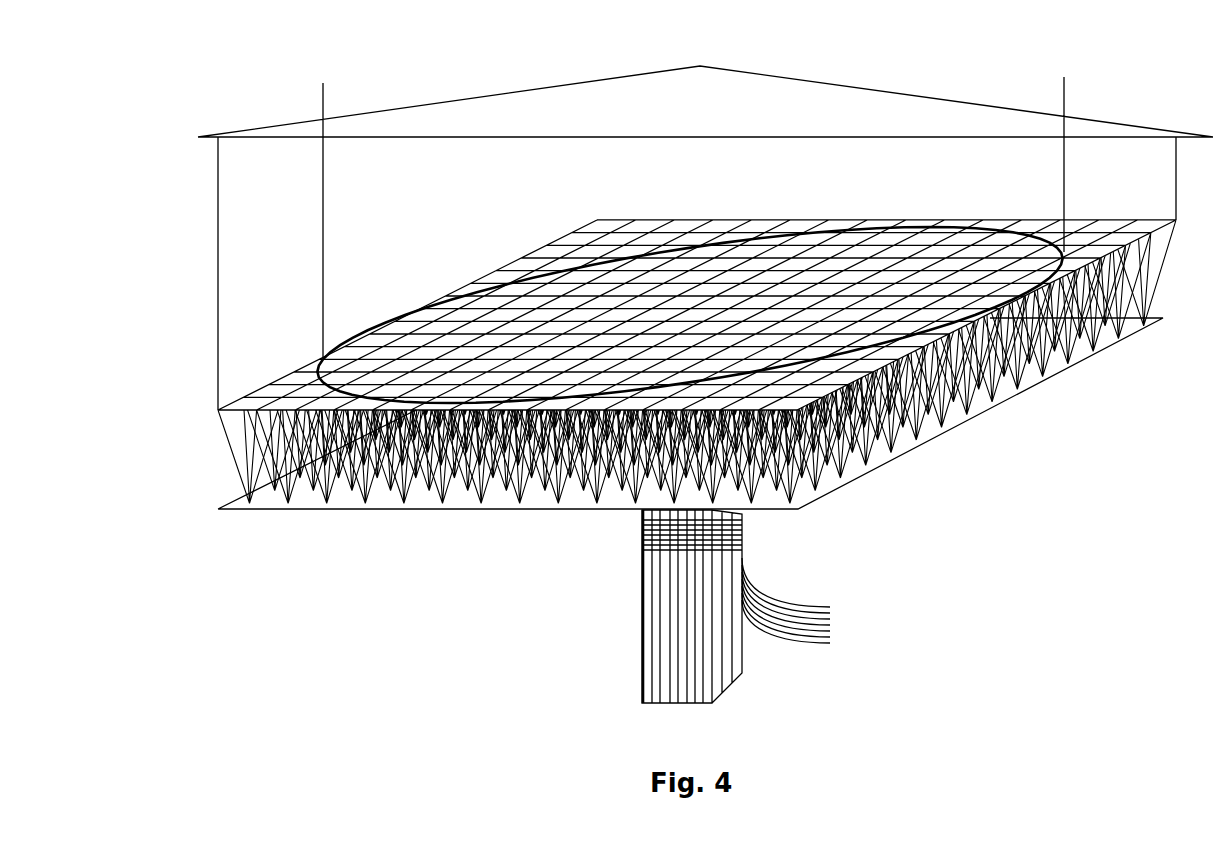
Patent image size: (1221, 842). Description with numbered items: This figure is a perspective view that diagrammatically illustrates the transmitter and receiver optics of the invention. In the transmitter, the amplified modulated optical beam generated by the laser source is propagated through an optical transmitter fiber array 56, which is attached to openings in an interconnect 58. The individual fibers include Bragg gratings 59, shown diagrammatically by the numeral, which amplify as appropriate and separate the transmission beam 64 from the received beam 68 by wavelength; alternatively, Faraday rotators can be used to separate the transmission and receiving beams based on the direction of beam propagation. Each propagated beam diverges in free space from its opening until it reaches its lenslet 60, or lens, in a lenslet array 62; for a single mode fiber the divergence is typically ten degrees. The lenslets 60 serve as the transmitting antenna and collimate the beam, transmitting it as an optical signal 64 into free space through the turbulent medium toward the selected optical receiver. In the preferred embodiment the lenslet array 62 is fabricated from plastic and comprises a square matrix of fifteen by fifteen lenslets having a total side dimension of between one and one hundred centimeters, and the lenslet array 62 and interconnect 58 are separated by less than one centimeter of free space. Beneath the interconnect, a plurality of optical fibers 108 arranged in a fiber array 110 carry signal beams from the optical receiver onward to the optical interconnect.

The optical transmitter fiber array 56 is at (833, 620).
The interconnect 58 is at (273, 497).
The Bragg gratings 59 is at (642, 607).
The lenslet 60 is at (785, 255).
The lenslet array 62 is at (457, 288).
The transmission beam 64 is at (822, 95).
The received beam 68 is at (412, 317).
The optical fibers 108 is at (660, 597).
The fiber array 110 is at (643, 665).